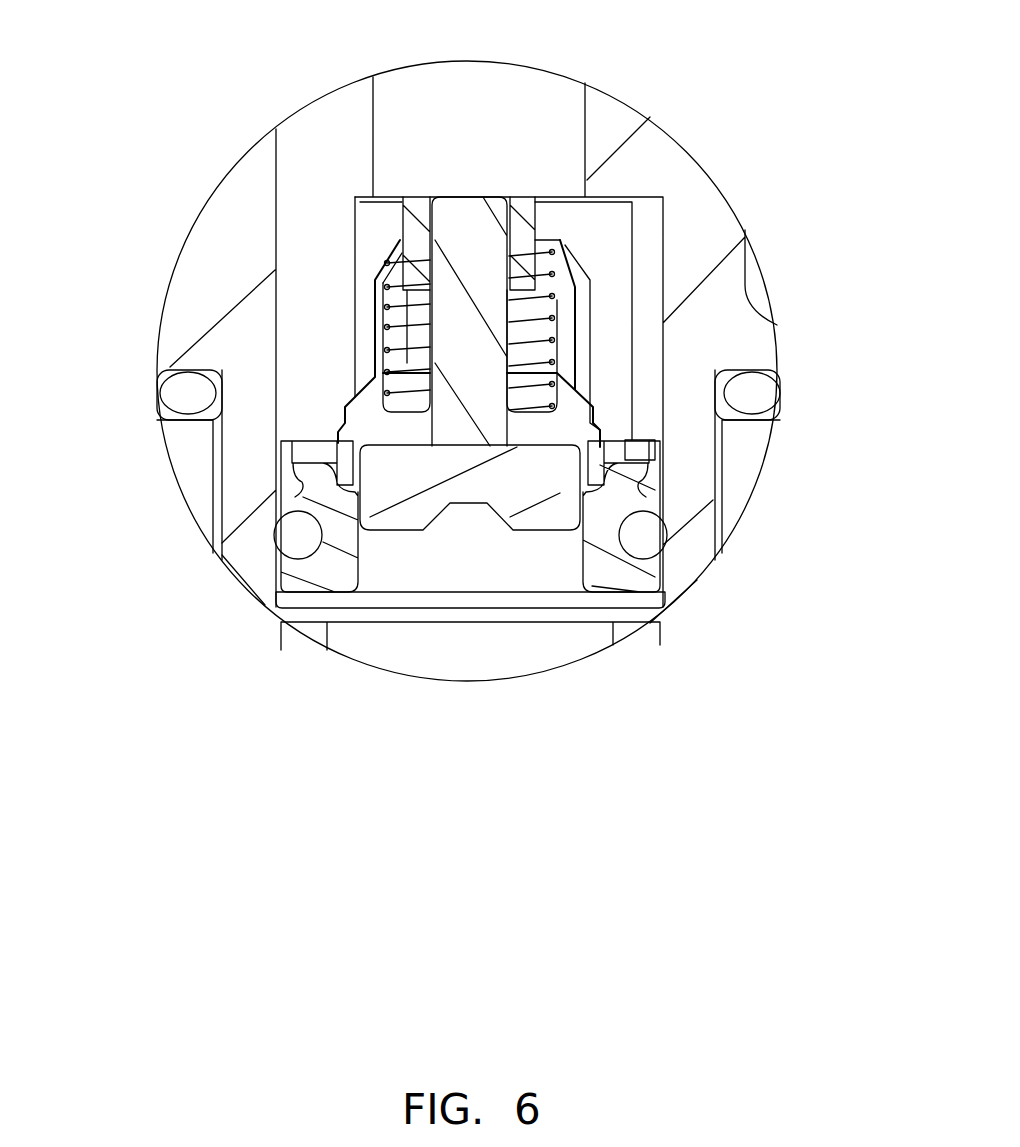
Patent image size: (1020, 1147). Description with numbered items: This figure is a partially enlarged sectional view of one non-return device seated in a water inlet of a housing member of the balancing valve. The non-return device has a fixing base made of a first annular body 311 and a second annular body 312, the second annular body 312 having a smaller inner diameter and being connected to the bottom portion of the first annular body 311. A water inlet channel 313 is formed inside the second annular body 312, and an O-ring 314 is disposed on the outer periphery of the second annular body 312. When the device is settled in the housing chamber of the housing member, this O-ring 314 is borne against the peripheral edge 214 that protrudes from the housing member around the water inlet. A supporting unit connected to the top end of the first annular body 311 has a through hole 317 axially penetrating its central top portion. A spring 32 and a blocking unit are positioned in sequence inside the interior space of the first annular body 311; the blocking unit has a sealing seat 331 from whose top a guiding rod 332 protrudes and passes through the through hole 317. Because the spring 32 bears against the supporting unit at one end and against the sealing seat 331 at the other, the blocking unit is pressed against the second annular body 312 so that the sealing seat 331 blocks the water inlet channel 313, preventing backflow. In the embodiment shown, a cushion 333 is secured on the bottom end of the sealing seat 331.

The spring 32 is at (552, 253).
The guiding rod 332 is at (488, 210).
The through hole 317 is at (469, 280).
The sealing seat 331 is at (338, 430).
The cushion 333 is at (567, 475).
The first annular body 311 is at (290, 484).
The O-ring 314 is at (660, 558).
The peripheral edge 214 is at (207, 548).
The second annular body 312 is at (272, 603).
The water inlet channel 313 is at (423, 543).